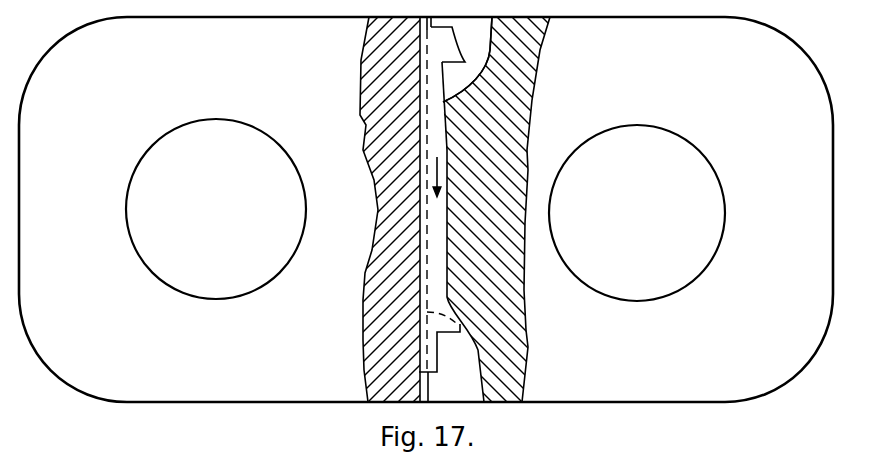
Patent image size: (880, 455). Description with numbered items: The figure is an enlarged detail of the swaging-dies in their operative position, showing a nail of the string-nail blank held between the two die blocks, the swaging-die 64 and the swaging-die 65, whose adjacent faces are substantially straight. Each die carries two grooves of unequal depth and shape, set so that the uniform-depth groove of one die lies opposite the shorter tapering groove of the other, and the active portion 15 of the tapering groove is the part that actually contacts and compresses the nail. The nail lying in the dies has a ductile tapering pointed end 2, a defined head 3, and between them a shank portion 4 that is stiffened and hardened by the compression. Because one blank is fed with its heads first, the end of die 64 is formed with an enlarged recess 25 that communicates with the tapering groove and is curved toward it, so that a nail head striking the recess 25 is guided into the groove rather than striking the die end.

The ductile tapering pointed end 2 is at (438, 90).
The defined head 3 is at (452, 59).
The stiffened and hardened shank portion 4 is at (437, 193).
The active portion of the groove 15 is at (447, 237).
The enlarged recess 25 is at (492, 57).
The swaging-die 64 is at (626, 398).
The swaging-die 65 is at (304, 392).